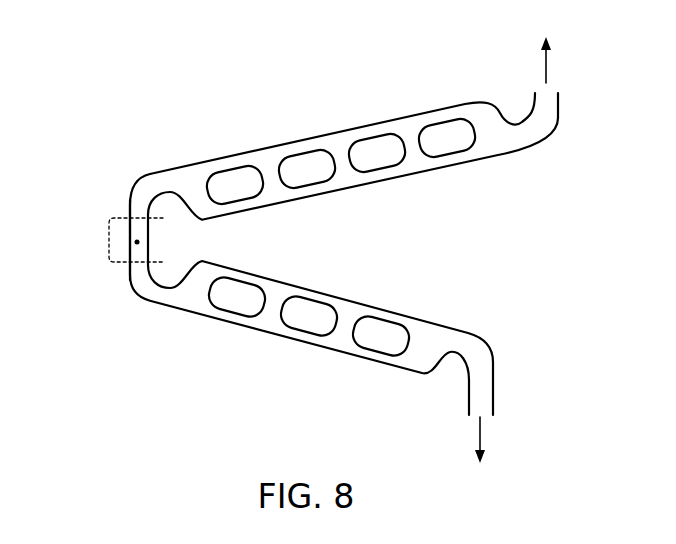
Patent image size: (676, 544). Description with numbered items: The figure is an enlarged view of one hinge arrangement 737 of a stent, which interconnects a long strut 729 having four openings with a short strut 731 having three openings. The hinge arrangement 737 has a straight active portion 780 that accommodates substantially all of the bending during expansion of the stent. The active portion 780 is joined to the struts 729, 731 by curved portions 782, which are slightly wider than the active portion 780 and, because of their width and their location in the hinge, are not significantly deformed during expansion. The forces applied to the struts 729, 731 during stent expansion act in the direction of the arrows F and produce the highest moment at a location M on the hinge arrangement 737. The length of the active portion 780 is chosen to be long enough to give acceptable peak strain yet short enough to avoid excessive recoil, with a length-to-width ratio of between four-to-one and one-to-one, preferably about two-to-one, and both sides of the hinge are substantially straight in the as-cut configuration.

The long strut 729 is at (335, 133).
The short strut 731 is at (300, 343).
The hinge arrangement 737 is at (92, 188).
The active portion 780 is at (110, 220).
The curved portion 782 is at (140, 200).
The location of highest moment M is at (137, 245).
The force direction arrows F is at (523, 250).